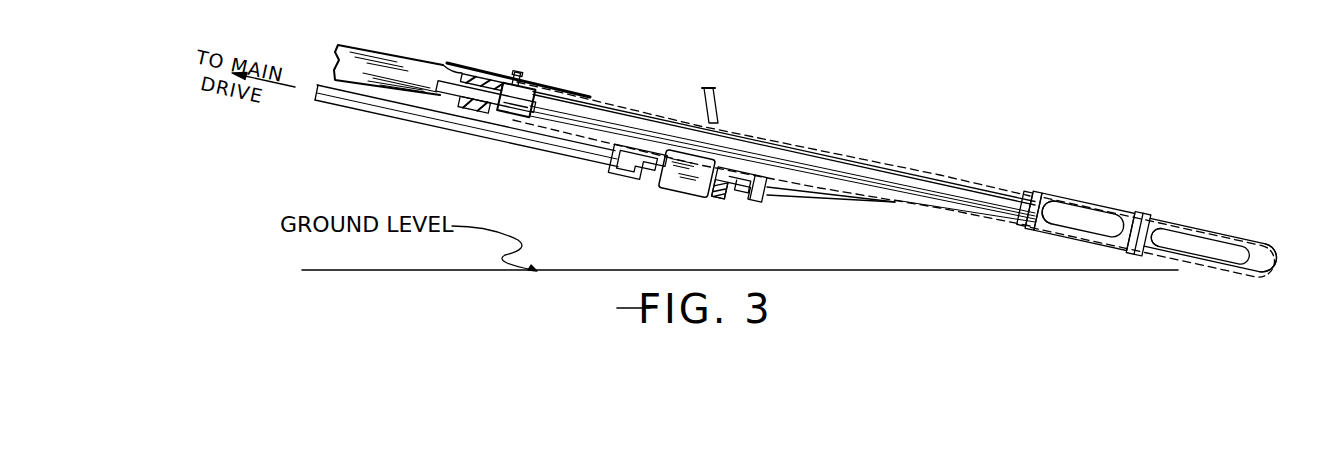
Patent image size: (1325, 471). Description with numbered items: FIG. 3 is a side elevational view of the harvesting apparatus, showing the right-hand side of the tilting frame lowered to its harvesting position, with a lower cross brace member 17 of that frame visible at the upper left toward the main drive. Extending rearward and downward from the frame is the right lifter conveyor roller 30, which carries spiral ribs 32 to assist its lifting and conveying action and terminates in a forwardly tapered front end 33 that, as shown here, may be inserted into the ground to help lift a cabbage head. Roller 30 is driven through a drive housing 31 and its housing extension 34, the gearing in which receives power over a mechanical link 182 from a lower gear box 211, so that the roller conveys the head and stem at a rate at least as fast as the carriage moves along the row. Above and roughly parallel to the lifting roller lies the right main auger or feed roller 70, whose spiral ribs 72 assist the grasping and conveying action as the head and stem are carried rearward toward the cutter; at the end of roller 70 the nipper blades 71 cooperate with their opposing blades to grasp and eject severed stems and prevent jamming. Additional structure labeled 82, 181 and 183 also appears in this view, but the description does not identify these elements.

The lower cross brace member 17 is at (442, 62).
The guide rail 82 is at (535, 80).
The nipper blades 71 is at (510, 108).
The support rail 181 is at (466, 126).
The right main auger or feed roller 70 is at (784, 149).
The spiral ribs 72 is at (887, 179).
The post 183 is at (736, 103).
The lower gear box 211 is at (688, 180).
The mechanical link 182 is at (782, 170).
The drive housing 31 is at (1100, 205).
The housing extension 34 is at (1146, 217).
The lifter conveyor roller 30 is at (1198, 240).
The forwardly tapered front end 33 is at (1282, 241).
The spiral ribs 32 is at (1286, 273).